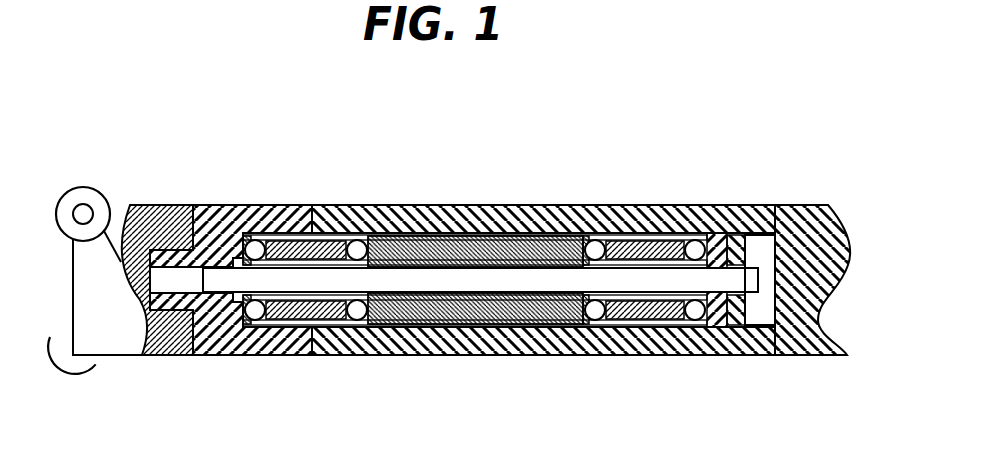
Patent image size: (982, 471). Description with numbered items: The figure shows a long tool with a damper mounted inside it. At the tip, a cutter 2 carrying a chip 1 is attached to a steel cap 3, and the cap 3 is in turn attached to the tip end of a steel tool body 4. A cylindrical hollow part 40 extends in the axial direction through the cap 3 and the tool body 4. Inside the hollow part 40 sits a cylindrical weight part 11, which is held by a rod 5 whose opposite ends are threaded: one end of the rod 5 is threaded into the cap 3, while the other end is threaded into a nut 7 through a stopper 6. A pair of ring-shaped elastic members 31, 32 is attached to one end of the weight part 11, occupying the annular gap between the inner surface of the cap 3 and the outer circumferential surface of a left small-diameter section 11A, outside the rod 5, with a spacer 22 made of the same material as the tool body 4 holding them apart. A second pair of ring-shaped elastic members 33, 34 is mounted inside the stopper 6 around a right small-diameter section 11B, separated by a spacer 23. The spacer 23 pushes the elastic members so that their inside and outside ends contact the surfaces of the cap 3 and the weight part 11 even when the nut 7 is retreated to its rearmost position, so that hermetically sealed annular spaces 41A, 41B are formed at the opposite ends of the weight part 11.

The chip 1 is at (82, 195).
The cutter 2 is at (137, 206).
The cap 3 is at (217, 206).
The tool body 4 is at (742, 212).
The rod 5 is at (213, 280).
The stopper 6 is at (722, 330).
The nut 7 is at (748, 332).
The weight part 11 is at (470, 312).
The left small-diameter section 11A is at (287, 206).
The right small-diameter section 11B is at (622, 236).
The spacer 22 is at (297, 312).
The spacer 23 is at (643, 325).
The ring-shaped elastic member 31 is at (255, 312).
The ring-shaped elastic member 32 is at (357, 312).
The ring-shaped elastic member 33 is at (595, 247).
The ring-shaped elastic member 34 is at (695, 247).
The hollow part 40 is at (758, 250).
The hermetically sealed annular space 41A is at (340, 206).
The hermetically sealed annular space 41B is at (658, 238).